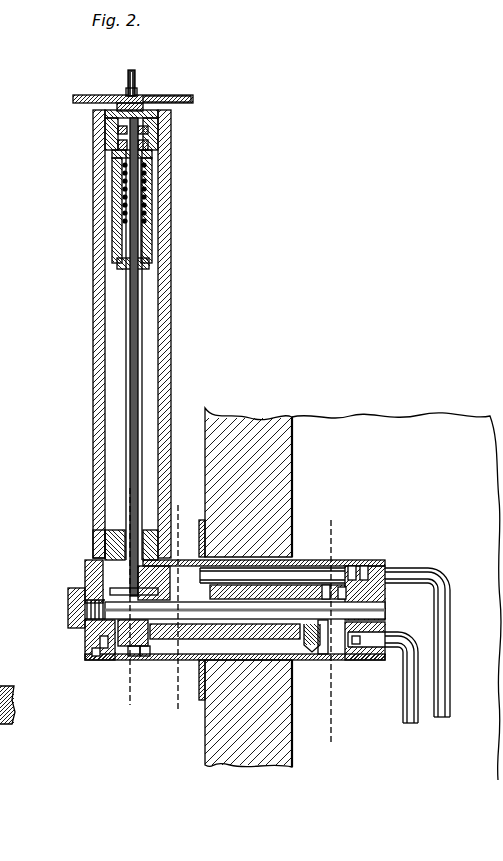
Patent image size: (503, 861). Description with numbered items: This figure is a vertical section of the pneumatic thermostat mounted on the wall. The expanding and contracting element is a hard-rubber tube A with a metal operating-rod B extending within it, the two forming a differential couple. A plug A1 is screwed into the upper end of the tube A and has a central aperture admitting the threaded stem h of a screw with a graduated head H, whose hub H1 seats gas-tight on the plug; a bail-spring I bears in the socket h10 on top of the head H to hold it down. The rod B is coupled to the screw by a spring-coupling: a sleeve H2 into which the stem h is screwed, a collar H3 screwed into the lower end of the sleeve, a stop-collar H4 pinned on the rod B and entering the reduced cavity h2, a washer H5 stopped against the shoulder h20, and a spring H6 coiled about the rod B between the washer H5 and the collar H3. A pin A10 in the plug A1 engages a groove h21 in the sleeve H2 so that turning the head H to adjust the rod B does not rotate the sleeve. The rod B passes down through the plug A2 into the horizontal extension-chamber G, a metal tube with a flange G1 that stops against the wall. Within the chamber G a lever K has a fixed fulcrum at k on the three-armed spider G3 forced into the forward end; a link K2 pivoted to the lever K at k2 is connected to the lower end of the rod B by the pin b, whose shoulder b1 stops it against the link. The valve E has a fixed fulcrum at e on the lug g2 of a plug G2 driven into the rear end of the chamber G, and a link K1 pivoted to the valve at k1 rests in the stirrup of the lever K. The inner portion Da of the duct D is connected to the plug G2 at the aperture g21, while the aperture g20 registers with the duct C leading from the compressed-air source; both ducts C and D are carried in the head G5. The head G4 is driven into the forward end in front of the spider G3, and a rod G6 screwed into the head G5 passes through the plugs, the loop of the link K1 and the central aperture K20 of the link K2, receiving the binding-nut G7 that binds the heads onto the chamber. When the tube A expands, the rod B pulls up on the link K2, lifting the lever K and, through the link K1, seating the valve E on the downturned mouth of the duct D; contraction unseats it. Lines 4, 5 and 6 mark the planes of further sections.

The bail-spring I is at (128, 80).
The central socket h10 is at (134, 94).
The hub of screw-head H1 is at (160, 97).
The graduated head H is at (190, 97).
The plug A1 is at (171, 118).
The groove h21 is at (173, 130).
The threaded stem h is at (110, 132).
The pin A10 is at (160, 143).
The reduced cavity h2 is at (118, 150).
The shoulder h20 is at (150, 160).
The stop-collar H4 is at (118, 160).
The washer H5 is at (150, 172).
The sleeve H2 is at (118, 205).
The spring H6 is at (150, 203).
The collar H3 is at (118, 262).
The hard-rubber tube A is at (97, 300).
The operating-rod B is at (130, 362).
The valve E is at (160, 650).
The plug A2 is at (105, 535).
The shoulder b1 is at (95, 548).
The pivot-pin b is at (95, 575).
The chamber G is at (288, 555).
The binding-nut G7 is at (70, 612).
The rod G6 is at (76, 598).
The plug G2 is at (385, 605).
The head G5 is at (385, 628).
The head G4 is at (88, 630).
The fulcrum k is at (100, 644).
The three-armed spider G3 is at (92, 656).
The link K2 is at (126, 656).
The pivot k2 is at (131, 652).
The central aperture K20 is at (141, 656).
The link K1 is at (325, 640).
The pivot k1 is at (335, 560).
The fixed fulcrum e is at (340, 562).
The inner portion of duct D Da is at (318, 560).
The lug g2 is at (352, 562).
The aperture g21 is at (366, 562).
The aperture g20 is at (358, 642).
The duct D is at (408, 583).
The duct C is at (390, 650).
The lever K is at (258, 655).
The flange G1 is at (201, 700).
The section line 4 is at (124, 496).
The section line 5 is at (172, 519).
The section line 6 is at (318, 528).